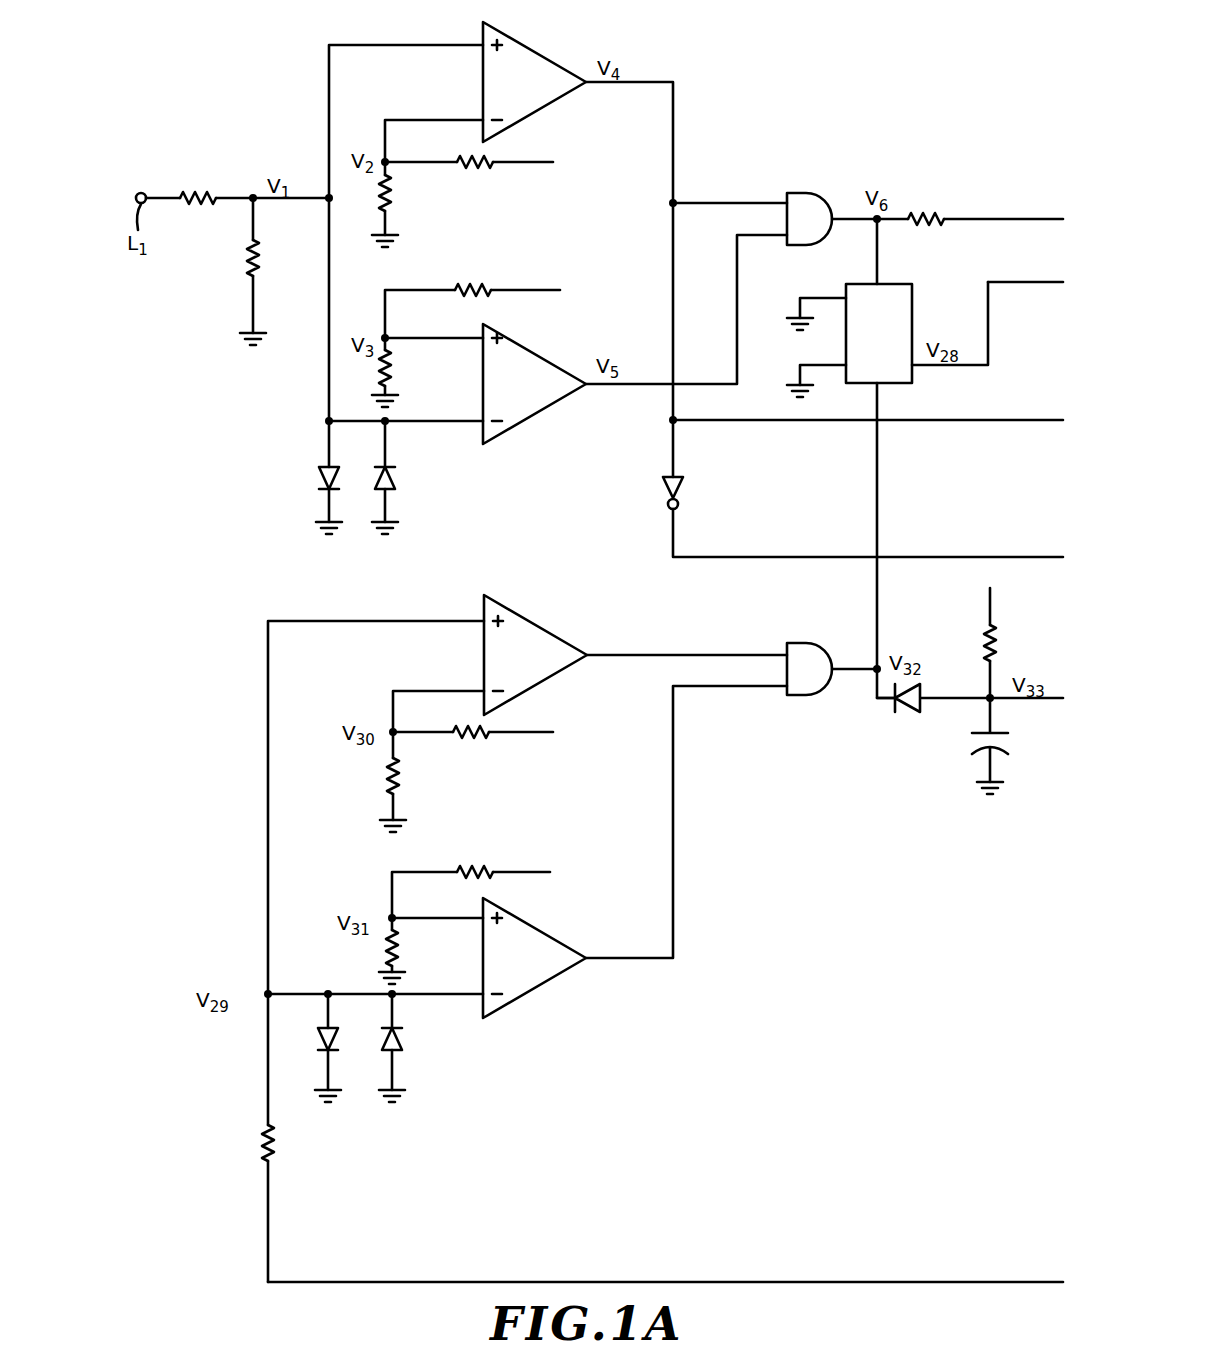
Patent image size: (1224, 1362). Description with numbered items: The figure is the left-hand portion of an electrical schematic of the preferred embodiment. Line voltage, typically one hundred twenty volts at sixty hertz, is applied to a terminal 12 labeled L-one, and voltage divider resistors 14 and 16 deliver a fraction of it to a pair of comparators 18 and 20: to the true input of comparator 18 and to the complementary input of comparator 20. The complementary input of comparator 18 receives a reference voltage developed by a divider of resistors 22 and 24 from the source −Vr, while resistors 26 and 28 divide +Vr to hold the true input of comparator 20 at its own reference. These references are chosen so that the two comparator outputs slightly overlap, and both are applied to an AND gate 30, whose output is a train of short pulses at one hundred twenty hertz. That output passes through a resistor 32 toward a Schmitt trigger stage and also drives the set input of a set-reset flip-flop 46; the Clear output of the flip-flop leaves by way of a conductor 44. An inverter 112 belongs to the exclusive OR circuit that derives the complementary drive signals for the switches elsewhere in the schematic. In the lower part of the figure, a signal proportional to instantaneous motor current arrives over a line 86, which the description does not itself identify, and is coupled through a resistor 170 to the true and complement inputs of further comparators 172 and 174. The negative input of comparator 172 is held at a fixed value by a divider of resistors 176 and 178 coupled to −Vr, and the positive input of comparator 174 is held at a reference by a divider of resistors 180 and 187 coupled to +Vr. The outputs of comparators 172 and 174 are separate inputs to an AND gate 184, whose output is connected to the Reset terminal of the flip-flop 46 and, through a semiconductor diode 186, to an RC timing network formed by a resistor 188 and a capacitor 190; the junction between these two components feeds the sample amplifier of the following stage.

The terminal 12 is at (141, 192).
The voltage divider resistor 14 is at (199, 193).
The voltage divider resistor 16 is at (261, 261).
The comparator 18 is at (525, 45).
The comparator 20 is at (553, 408).
The resistor 22 is at (477, 168).
The resistor 24 is at (393, 203).
The resistor 26 is at (472, 285).
The resistor 28 is at (396, 369).
The AND gate 30 is at (806, 192).
The resistor 32 is at (932, 215).
The conductor 44 is at (1040, 282).
The set-reset flip-flop 46 is at (852, 284).
The conductor line 86 is at (568, 1280).
The inverter 112 is at (684, 492).
The resistor 170 is at (262, 1143).
The comparator 172 is at (542, 625).
The comparator 174 is at (533, 995).
The resistor 176 is at (466, 744).
The resistor 178 is at (374, 780).
The resistor 180 is at (466, 867).
The AND gate 184 is at (806, 642).
The semiconductor diode 186 is at (911, 711).
The resistor 187 is at (402, 944).
The resistor 188 is at (1001, 640).
The capacitor 190 is at (972, 744).